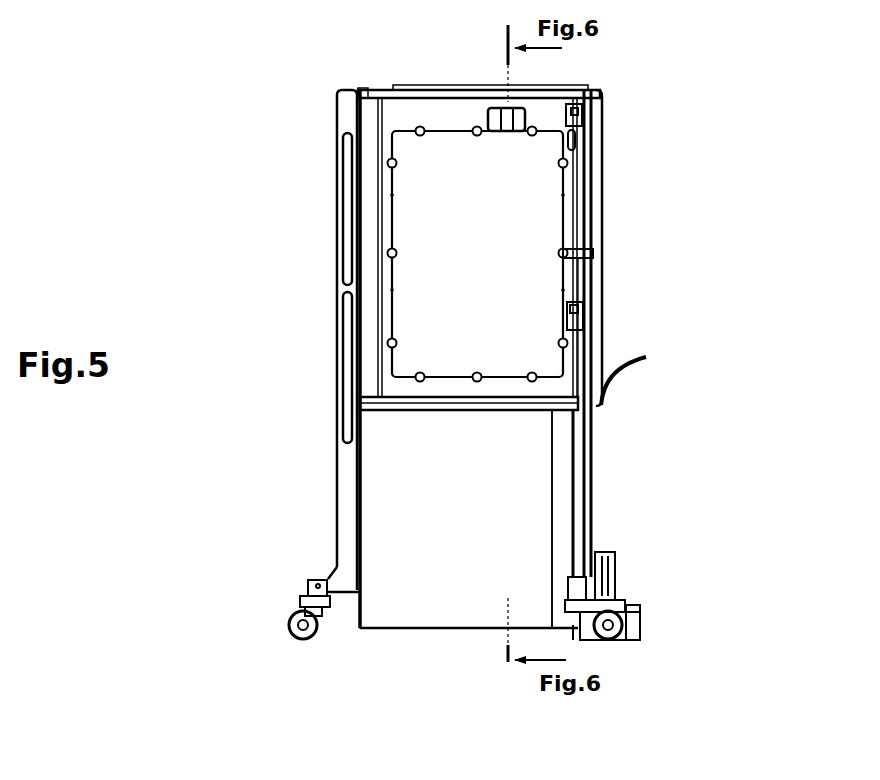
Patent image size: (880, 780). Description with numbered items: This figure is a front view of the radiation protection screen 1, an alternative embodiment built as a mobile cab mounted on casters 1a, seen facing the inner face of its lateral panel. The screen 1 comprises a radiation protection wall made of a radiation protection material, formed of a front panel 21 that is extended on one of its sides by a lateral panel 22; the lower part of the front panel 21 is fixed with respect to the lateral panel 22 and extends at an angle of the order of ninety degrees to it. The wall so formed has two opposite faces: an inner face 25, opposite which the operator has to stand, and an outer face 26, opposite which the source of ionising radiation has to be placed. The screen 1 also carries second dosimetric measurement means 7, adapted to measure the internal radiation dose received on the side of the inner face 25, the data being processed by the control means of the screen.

The screen 1 is at (653, 417).
The casters 1a is at (293, 607).
The second dosimetric measurement means 7 is at (496, 98).
The front panel 21 is at (608, 283).
The lateral panel 22 is at (426, 211).
The inner face 25 is at (567, 528).
The outer face 26 is at (591, 500).